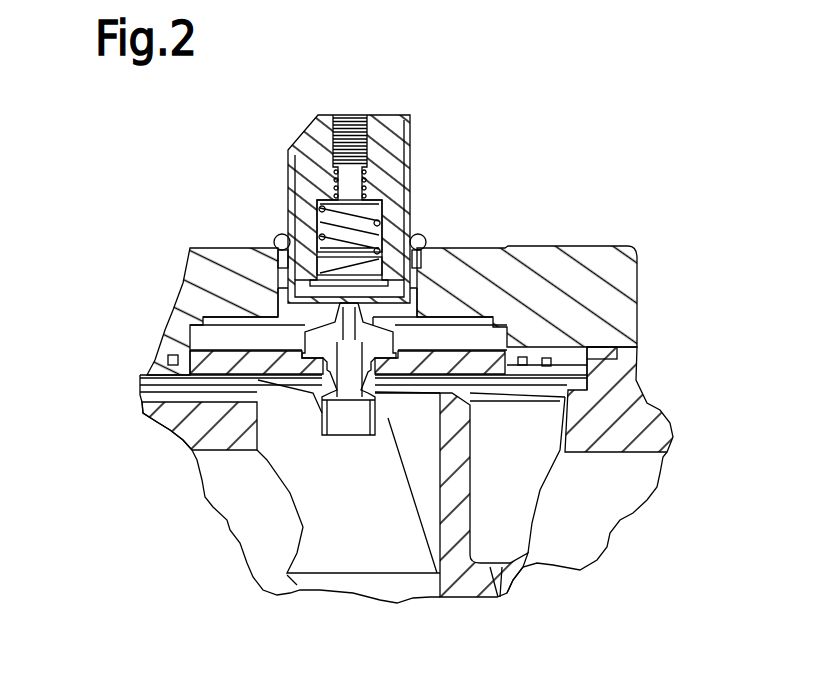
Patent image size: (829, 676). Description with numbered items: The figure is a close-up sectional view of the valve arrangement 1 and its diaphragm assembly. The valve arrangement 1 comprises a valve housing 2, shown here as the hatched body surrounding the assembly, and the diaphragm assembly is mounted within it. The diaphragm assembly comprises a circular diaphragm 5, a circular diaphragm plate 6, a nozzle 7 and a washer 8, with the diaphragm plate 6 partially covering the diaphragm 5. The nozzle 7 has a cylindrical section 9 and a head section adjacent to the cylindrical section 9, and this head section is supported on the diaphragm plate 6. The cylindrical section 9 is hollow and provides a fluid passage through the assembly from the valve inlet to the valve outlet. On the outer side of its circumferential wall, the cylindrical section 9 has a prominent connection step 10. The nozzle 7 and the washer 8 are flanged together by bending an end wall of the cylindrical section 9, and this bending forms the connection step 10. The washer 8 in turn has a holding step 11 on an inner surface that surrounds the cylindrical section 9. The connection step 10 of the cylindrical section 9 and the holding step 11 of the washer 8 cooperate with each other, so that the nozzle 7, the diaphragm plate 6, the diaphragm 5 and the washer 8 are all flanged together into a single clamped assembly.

The valve arrangement 1 is at (84, 222).
The valve housing 2 is at (617, 303).
The diaphragm 5 is at (478, 375).
The diaphragm plate 6 is at (455, 358).
The nozzle 7 is at (335, 337).
The washer 8 is at (382, 400).
The cylindrical section 9 is at (327, 370).
The connection step 10 is at (382, 398).
The holding step 11 is at (313, 395).